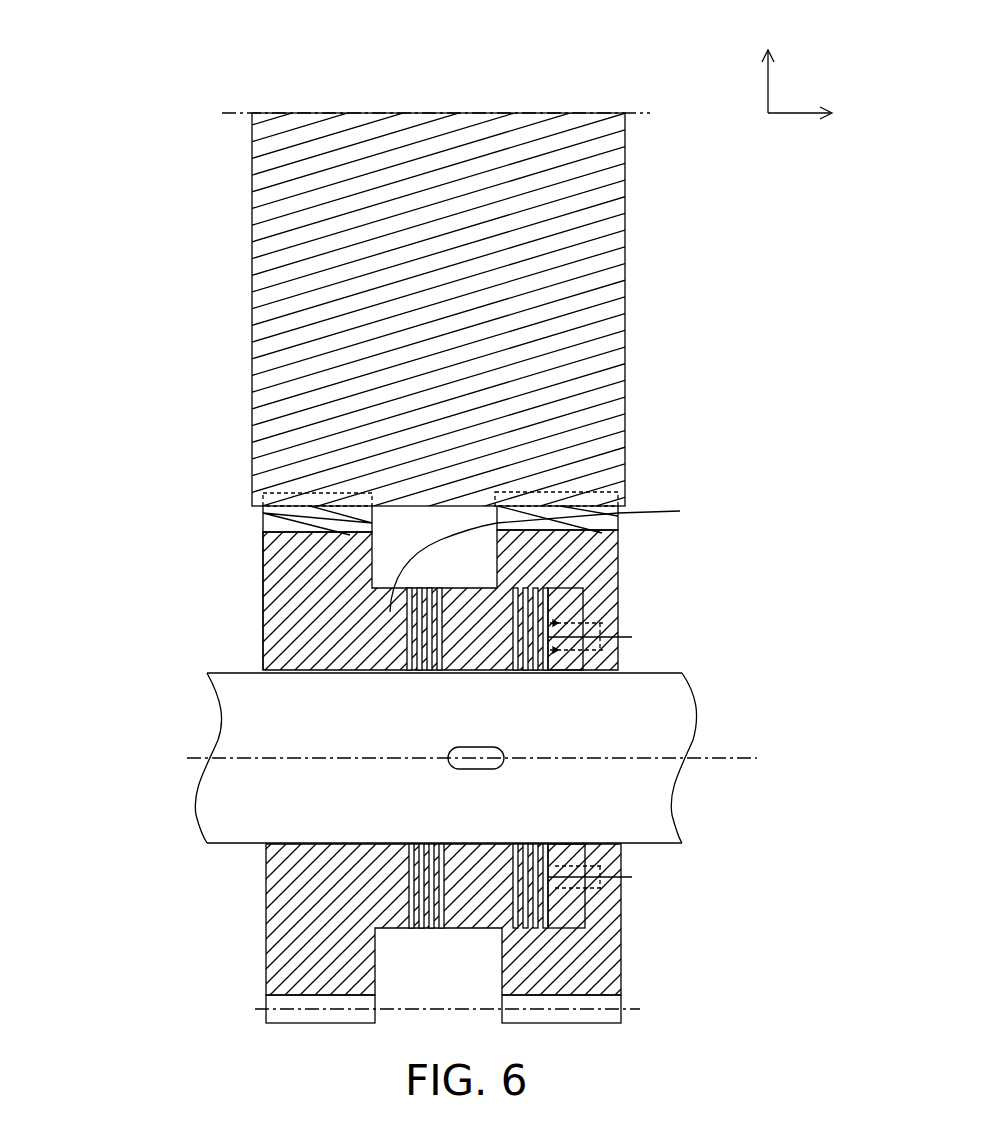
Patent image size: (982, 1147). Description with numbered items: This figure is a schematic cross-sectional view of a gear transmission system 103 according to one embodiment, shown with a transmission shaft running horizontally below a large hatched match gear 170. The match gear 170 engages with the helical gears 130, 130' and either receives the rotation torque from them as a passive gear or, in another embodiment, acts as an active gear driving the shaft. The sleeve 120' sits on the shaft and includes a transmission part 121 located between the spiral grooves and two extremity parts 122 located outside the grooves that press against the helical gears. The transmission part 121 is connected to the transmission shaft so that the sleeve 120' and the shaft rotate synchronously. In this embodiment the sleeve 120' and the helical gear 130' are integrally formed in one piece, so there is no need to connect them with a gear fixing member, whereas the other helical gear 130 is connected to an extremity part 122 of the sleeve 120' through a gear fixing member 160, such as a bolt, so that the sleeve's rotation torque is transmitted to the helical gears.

The gear transmission system 103 is at (106, 35).
The match gear 170 is at (606, 416).
The sleeve 120' is at (532, 542).
The transmission part 121 is at (618, 541).
The extremity parts 122 is at (618, 512).
The helical gear 130 is at (496, 590).
The helical gear 130' is at (230, 601).
The gear fixing member 160 is at (610, 605).